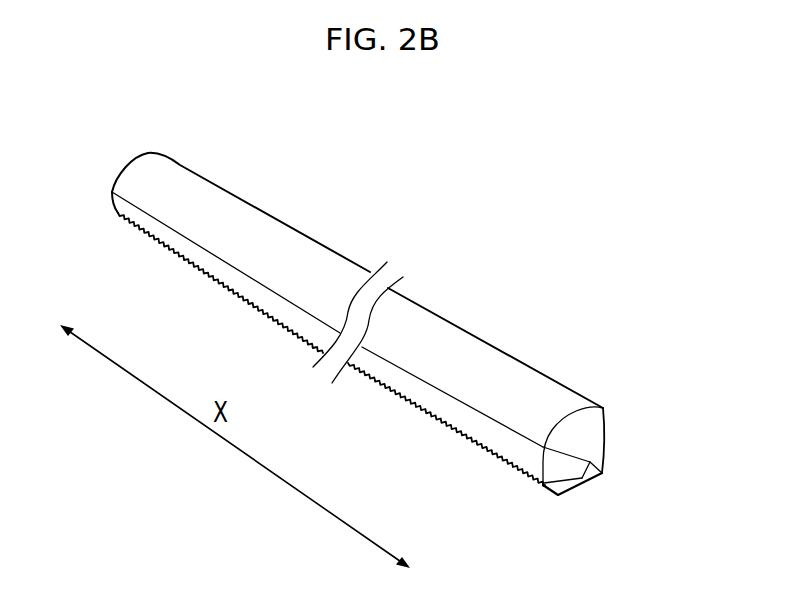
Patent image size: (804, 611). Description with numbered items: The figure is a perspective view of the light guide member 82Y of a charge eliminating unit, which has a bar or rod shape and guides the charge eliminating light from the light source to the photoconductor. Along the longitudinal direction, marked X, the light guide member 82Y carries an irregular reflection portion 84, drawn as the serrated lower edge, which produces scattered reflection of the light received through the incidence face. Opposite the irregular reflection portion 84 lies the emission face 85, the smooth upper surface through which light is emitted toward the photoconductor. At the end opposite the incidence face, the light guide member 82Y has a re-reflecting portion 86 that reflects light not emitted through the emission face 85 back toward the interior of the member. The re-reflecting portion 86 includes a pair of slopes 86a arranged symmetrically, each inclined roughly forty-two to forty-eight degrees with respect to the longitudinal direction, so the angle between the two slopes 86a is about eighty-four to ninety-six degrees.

The light guide member 82Y is at (402, 365).
The irregular reflection portion 84 is at (405, 403).
The emission face 85 is at (265, 235).
The re-reflecting portion 86 is at (614, 484).
The slopes 86a is at (597, 437).